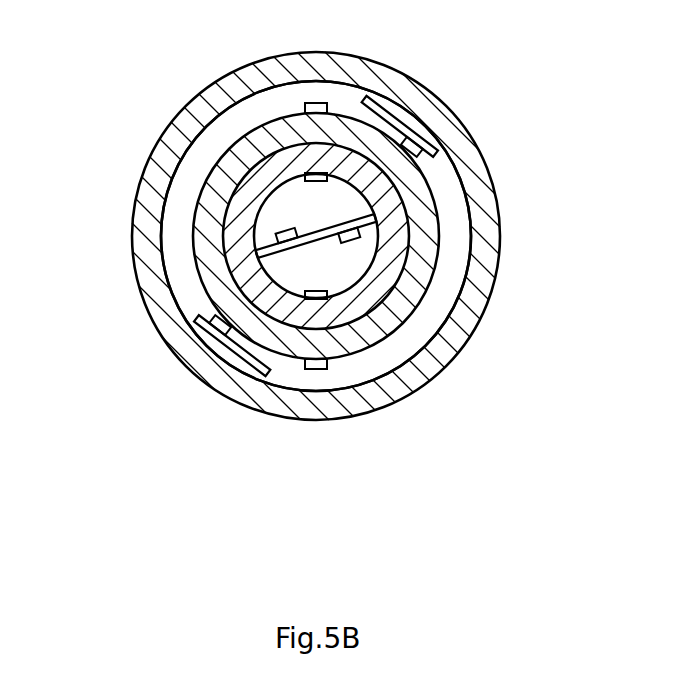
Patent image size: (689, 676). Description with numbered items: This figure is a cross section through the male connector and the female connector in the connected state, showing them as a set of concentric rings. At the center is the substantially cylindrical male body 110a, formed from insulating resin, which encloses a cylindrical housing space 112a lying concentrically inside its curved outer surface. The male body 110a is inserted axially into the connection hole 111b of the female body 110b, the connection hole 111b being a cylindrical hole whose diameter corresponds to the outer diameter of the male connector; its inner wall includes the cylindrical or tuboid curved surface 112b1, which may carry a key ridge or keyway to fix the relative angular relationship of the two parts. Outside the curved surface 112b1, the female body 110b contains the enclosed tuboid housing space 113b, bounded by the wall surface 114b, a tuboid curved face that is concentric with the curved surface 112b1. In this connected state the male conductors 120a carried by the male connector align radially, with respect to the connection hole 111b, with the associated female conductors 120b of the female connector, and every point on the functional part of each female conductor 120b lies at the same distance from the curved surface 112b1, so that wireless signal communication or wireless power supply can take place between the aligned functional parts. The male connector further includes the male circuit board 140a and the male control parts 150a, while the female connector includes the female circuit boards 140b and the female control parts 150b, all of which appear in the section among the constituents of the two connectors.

The male body 110a is at (386, 342).
The female body 110b is at (445, 93).
The connection hole 111b is at (455, 176).
The housing space 112a is at (297, 208).
The curved surface 112b1 is at (380, 218).
The housing space 113b is at (178, 253).
The wall surface 114b is at (448, 234).
The male conductors 120a is at (312, 172).
The female conductors 120b is at (316, 103).
The male circuit board 140a is at (385, 268).
The female circuit boards 140b is at (412, 130).
The male control parts 150a is at (282, 230).
The female control parts 150b is at (423, 132).